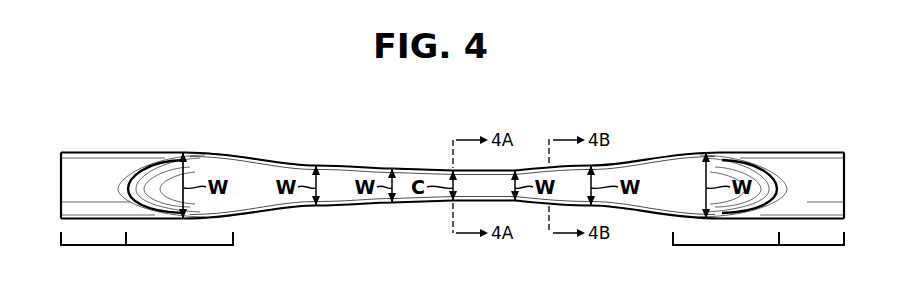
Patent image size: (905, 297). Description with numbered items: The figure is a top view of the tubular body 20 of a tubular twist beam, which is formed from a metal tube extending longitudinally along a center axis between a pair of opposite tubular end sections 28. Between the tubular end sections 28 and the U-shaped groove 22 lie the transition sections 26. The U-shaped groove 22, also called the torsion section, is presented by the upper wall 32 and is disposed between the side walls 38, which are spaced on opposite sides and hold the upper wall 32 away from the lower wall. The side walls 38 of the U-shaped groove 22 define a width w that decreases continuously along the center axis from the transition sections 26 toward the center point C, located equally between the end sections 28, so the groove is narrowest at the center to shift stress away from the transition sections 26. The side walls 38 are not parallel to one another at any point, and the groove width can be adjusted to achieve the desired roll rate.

The tubular body 20 is at (688, 134).
The U-shaped groove 22 is at (427, 171).
The transition sections 26 is at (190, 247).
The tubular end sections 28 is at (94, 247).
The upper wall 32 is at (97, 170).
The side walls 38 is at (237, 155).